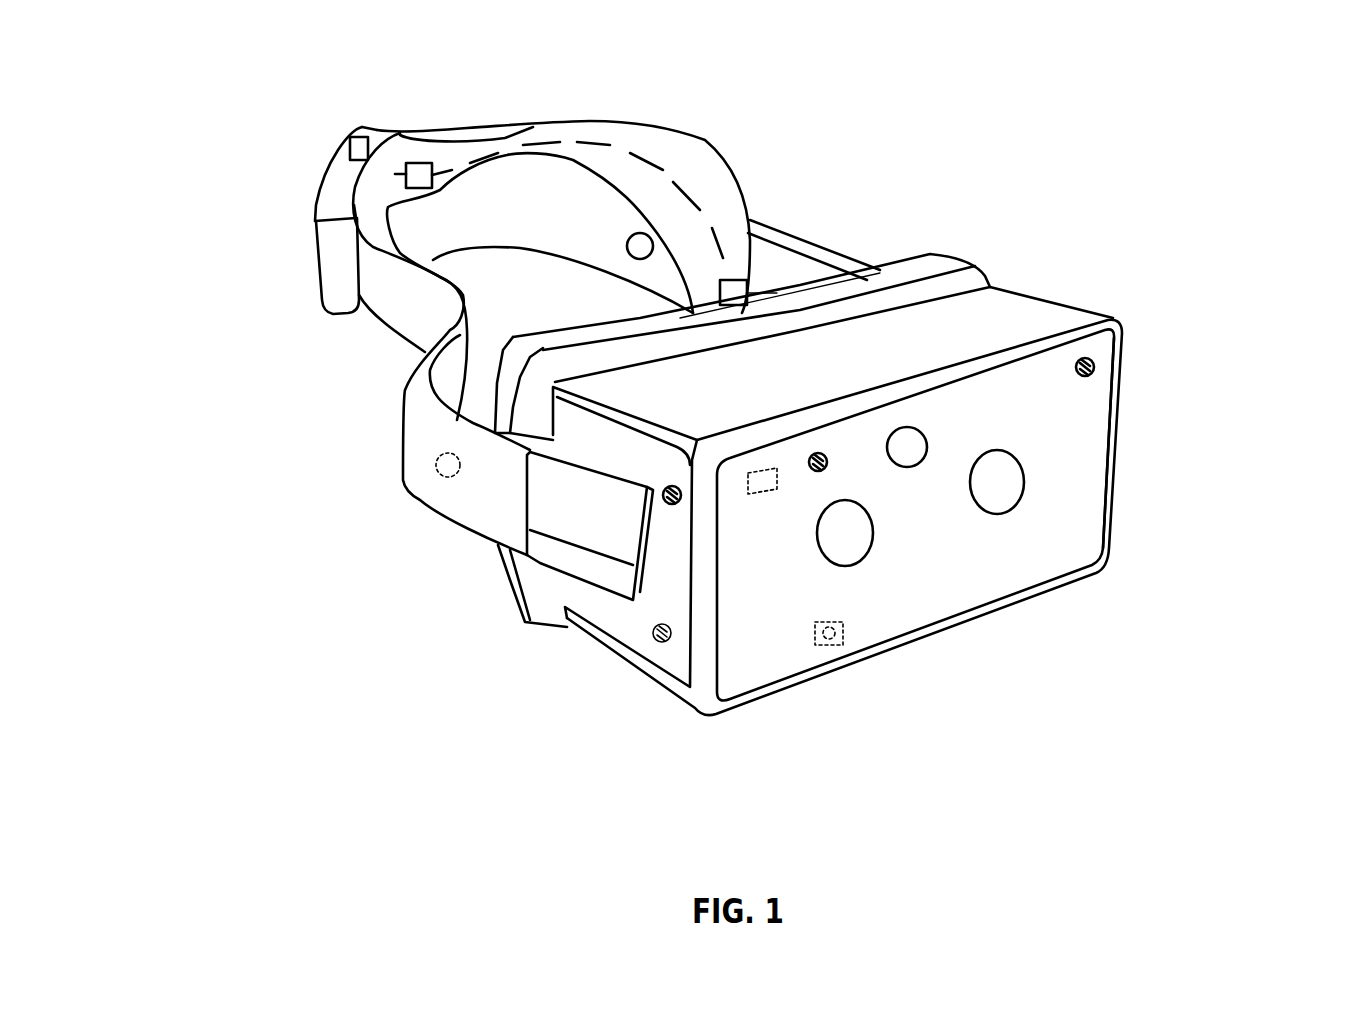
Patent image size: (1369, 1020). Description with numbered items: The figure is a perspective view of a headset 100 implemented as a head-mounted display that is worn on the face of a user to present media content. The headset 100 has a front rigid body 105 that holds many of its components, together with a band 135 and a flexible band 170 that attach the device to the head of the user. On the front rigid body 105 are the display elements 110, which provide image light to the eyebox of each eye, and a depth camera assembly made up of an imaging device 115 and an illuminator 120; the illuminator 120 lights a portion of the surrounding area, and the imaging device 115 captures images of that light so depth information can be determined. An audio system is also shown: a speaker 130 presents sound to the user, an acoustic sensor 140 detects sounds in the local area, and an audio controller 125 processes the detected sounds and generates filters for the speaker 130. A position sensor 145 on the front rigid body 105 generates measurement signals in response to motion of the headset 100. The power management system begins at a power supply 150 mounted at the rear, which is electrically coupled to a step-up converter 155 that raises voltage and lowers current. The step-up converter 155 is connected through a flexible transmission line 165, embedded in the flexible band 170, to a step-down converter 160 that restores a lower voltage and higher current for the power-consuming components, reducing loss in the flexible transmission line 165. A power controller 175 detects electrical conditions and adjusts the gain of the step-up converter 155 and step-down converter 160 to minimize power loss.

The headset 100 is at (283, 92).
The front rigid body 105 is at (1118, 317).
The display element 110 is at (1050, 537).
The imaging device 115 is at (867, 553).
The illuminator 120 is at (925, 432).
The audio controller 125 is at (748, 495).
The speaker 130 is at (437, 479).
The band 135 is at (780, 227).
The acoustic sensor 140 is at (654, 634).
The position sensor 145 is at (846, 634).
The power supply 150 is at (322, 288).
The step-up converter 155 is at (425, 163).
The step-down converter 160 is at (858, 280).
The flexible transmission line 165 is at (587, 143).
The flexible band 170 is at (677, 128).
The power controller 175 is at (350, 143).